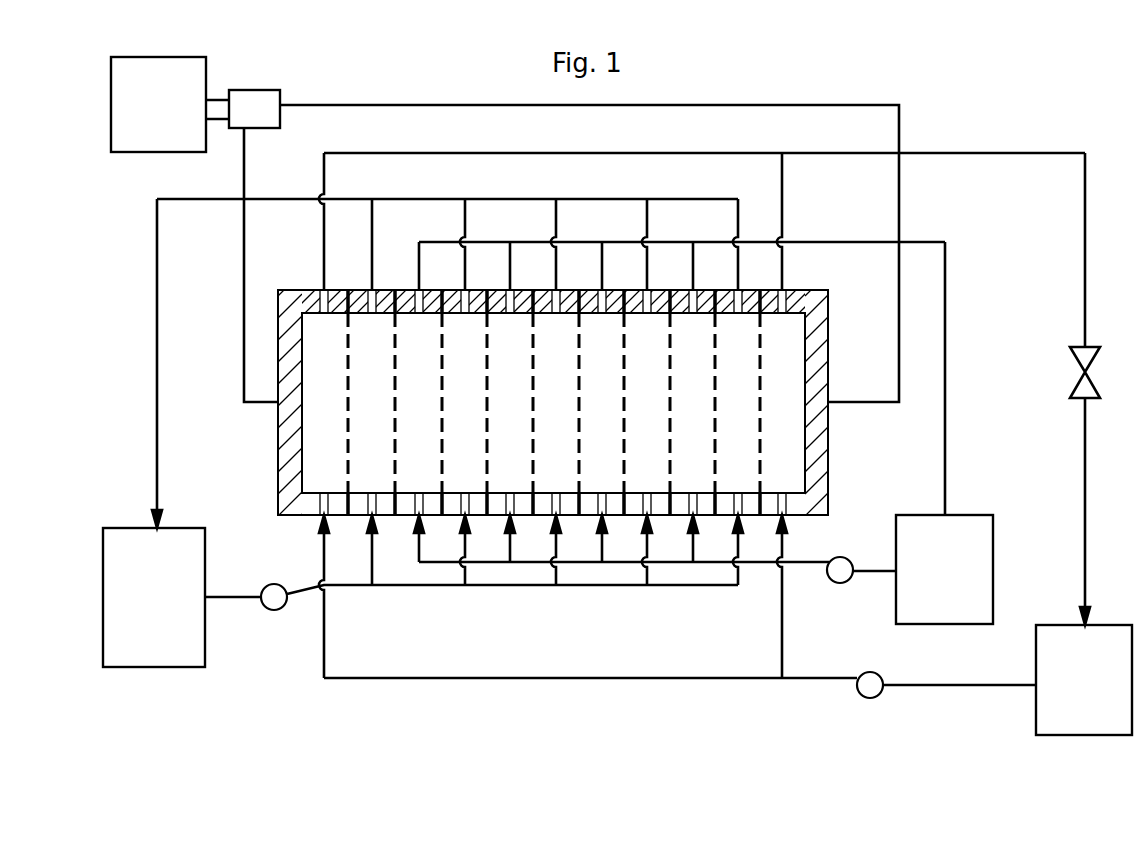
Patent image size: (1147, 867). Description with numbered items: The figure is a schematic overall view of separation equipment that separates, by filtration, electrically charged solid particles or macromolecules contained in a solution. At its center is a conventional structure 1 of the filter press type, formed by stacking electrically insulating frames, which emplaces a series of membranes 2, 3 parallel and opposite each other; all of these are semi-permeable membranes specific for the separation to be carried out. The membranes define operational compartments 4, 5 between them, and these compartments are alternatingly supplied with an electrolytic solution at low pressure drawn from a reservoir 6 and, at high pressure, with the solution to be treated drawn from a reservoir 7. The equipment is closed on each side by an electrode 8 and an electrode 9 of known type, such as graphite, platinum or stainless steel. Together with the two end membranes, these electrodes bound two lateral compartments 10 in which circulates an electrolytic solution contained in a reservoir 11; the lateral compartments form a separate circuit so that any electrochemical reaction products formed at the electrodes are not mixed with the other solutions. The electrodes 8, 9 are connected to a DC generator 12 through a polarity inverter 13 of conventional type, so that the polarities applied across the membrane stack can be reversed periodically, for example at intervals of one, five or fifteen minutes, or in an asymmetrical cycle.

The structure 1 is at (386, 290).
The membrane 2 is at (350, 444).
The membrane 3 is at (397, 452).
The compartment 4 is at (385, 352).
The compartment 5 is at (434, 354).
The reservoir 6 is at (188, 545).
The reservoir 7 is at (983, 567).
The electrode 8 is at (283, 428).
The electrode 9 is at (818, 360).
The lateral compartment 10 is at (349, 408).
The reservoir 11 is at (1062, 632).
The DC generator 12 is at (196, 82).
The polarity inverter 13 is at (270, 99).